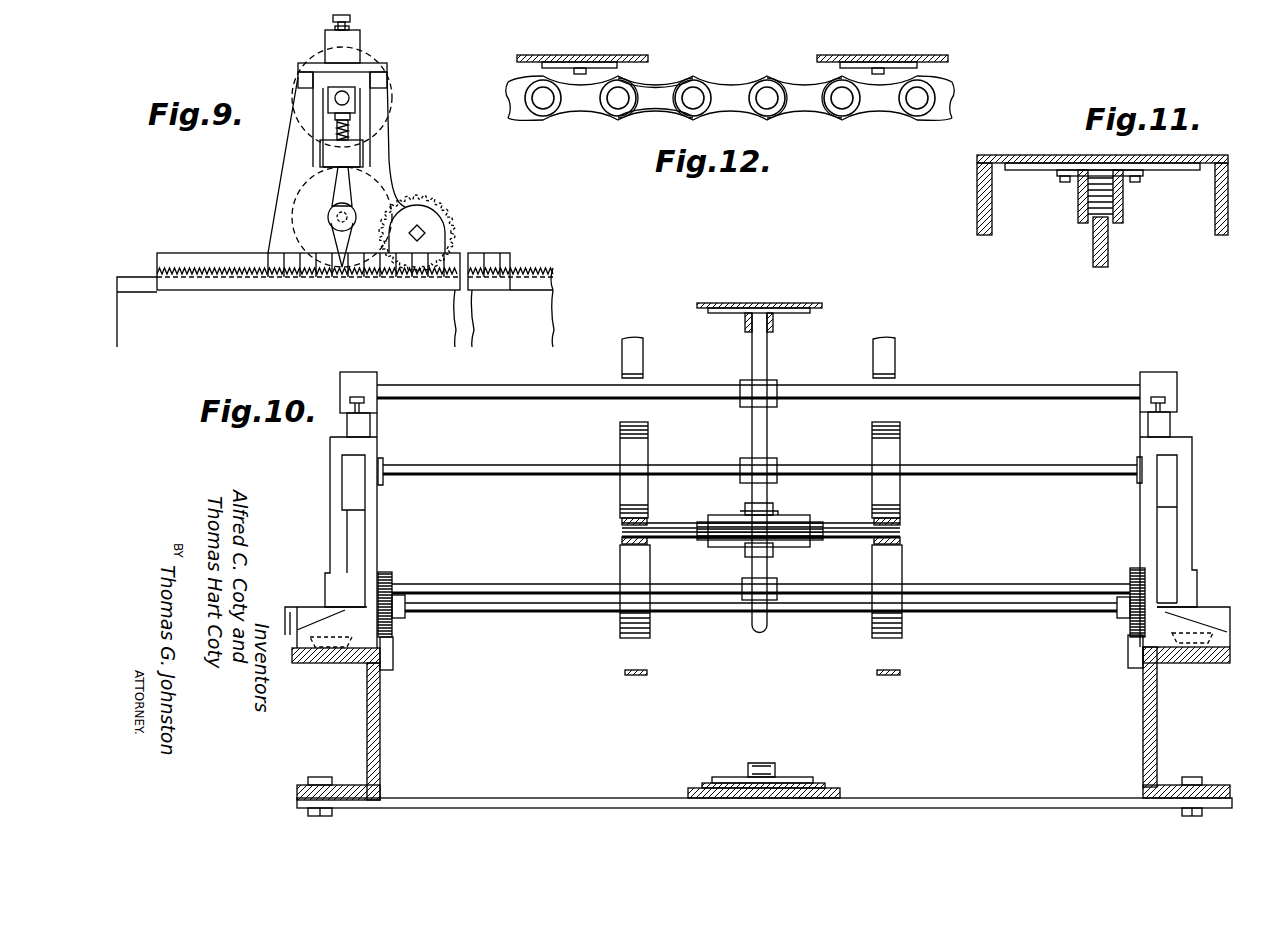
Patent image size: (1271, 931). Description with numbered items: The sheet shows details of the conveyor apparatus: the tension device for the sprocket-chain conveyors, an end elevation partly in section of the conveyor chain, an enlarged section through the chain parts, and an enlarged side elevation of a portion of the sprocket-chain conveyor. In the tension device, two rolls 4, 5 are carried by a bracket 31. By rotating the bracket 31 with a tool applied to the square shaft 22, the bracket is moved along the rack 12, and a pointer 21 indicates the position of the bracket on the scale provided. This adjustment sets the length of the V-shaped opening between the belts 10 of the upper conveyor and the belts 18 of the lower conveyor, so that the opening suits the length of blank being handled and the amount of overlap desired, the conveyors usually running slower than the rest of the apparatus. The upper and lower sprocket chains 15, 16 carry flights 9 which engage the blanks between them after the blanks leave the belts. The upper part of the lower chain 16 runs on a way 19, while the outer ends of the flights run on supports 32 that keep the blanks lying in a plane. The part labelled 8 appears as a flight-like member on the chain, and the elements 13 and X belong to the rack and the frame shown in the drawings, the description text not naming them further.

In FIG. 9, the roll 4 is at (388, 99).
In FIG. 10, the roll 4 is at (645, 443).
In FIG. 9, the roll 5 is at (389, 192).
In FIG. 10, the roll 5 is at (624, 572).
In FIG. 12, the plate 8 is at (876, 55).
In FIG. 12, the flight 9 is at (593, 55).
In FIG. 11, the flight 9 is at (1050, 155).
In FIG. 10, the flight 9 is at (806, 297).
In FIG. 10, the belt 10 is at (643, 372).
In FIG. 9, the rack 12 is at (522, 266).
In FIG. 10, the rack 12 is at (395, 660).
In FIG. 9, the gear rack 13 is at (447, 226).
In FIG. 10, the gear rack 13 is at (392, 626).
In FIG. 12, the sprocket chain 15 is at (728, 84).
In FIG. 10, the sprocket chain 15 is at (773, 322).
In FIG. 11, the sprocket chain 16 is at (1078, 198).
In FIG. 10, the sprocket chain 16 is at (750, 548).
In FIG. 10, the belt 18 is at (622, 540).
In FIG. 11, the way 19 is at (1108, 247).
In FIG. 9, the pointer 21 is at (328, 217).
In FIG. 10, the pointer 21 is at (296, 600).
In FIG. 9, the square shaft 22 is at (421, 229).
In FIG. 9, the bracket 31 is at (382, 147).
In FIG. 10, the bracket 31 is at (373, 532).
In FIG. 11, the support 32 is at (1215, 213).
In FIG. 9, the frame X is at (542, 302).
In FIG. 10, the frame X is at (370, 720).